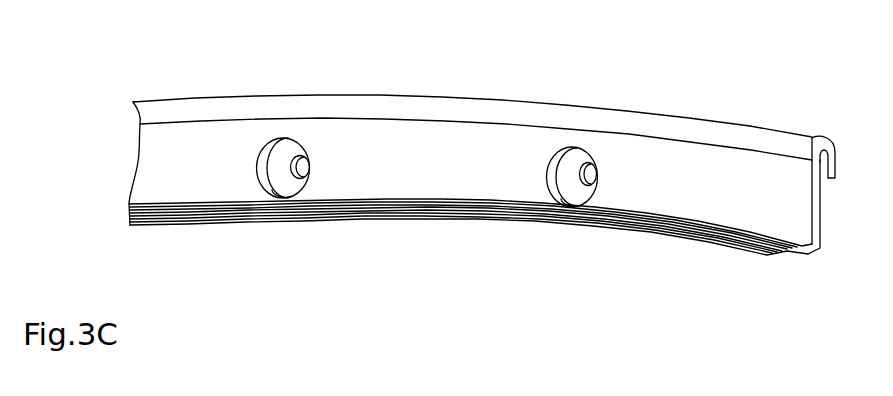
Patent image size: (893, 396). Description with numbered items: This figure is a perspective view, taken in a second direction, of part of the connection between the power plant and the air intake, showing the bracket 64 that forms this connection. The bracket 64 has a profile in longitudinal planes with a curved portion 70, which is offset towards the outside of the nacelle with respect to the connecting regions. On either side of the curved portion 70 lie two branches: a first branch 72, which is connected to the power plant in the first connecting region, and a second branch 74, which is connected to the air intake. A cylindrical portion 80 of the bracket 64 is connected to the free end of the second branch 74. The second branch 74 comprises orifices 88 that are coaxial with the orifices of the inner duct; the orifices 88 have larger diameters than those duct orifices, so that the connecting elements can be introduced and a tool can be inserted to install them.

The bracket 64 is at (734, 104).
The curved portion 70 is at (646, 108).
The first branch 72 is at (832, 170).
The second branch 74 is at (795, 193).
The cylindrical portion 80 is at (792, 252).
The orifices 88 is at (288, 198).